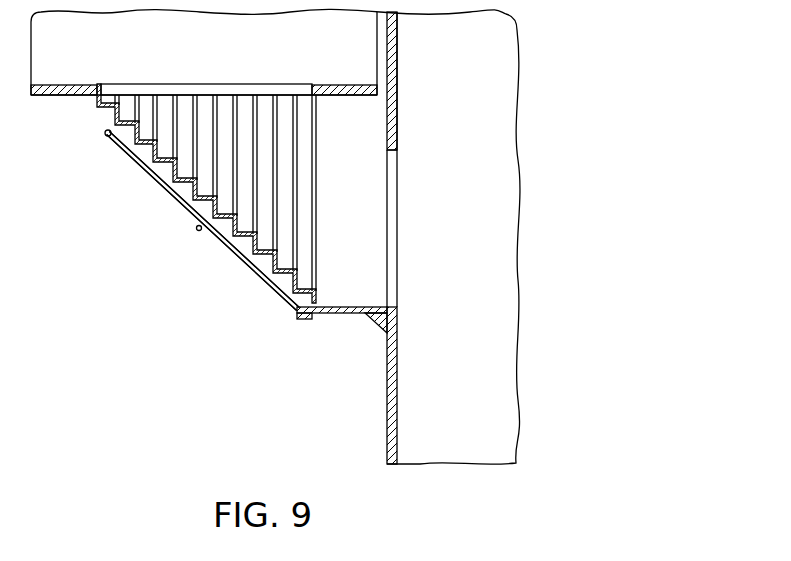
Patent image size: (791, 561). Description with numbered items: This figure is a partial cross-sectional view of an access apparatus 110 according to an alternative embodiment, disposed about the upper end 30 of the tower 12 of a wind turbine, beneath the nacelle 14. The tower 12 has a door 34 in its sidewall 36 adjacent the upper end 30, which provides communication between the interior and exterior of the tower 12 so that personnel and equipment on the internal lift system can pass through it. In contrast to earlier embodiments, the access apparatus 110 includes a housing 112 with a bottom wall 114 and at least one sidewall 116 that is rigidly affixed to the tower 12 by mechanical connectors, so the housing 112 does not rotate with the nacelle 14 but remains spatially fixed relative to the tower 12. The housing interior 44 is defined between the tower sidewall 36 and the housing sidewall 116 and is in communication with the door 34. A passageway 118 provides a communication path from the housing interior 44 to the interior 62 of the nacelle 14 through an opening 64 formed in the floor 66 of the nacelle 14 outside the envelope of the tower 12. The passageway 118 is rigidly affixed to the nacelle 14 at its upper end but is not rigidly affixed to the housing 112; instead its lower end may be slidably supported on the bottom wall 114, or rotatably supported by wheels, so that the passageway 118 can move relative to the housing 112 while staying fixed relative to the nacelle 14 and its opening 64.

The tower 12 is at (384, 438).
The nacelle 14 is at (73, 99).
The upper end 30 is at (398, 29).
The door 34 is at (390, 171).
The sidewall 36 is at (397, 56).
The housing interior 44 is at (359, 152).
The interior of the nacelle 62 is at (275, 236).
The opening 64 is at (310, 92).
The floor 66 is at (58, 84).
The access apparatus 110 is at (110, 312).
The housing 112 is at (178, 267).
The bottom wall 114 is at (339, 316).
The sidewall 116 is at (156, 187).
The passageway 118 is at (322, 206).